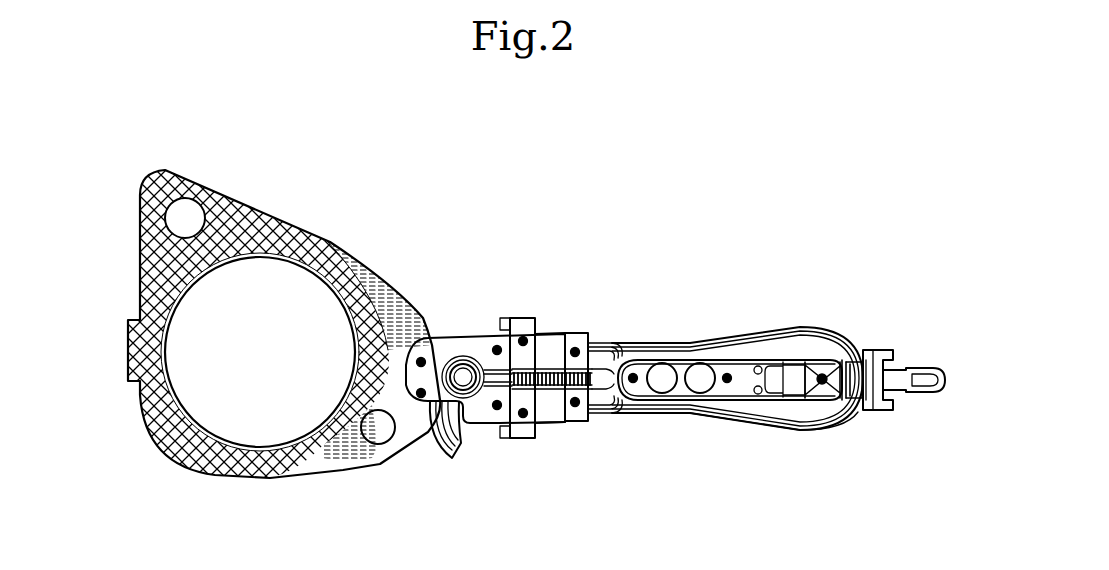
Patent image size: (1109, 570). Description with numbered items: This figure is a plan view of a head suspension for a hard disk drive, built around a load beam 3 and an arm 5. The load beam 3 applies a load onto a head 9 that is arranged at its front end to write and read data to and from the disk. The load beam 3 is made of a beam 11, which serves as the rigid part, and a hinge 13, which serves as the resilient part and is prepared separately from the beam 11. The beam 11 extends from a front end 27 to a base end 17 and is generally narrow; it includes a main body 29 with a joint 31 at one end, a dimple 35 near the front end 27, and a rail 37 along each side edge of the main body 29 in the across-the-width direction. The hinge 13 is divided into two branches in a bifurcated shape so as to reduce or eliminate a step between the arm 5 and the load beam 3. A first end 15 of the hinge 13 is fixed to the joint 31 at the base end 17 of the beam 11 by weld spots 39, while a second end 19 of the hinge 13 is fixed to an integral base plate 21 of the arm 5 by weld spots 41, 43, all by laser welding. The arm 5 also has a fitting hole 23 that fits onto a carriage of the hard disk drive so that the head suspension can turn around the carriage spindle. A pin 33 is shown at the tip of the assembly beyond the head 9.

The load beam 3 is at (761, 326).
The arm 5 is at (305, 226).
The head 9 is at (849, 340).
The beam 11 is at (726, 375).
The hinge 13 is at (551, 334).
The first end 15 is at (578, 330).
The base end 17 is at (590, 430).
The second end 19 is at (457, 331).
The base plate 21 is at (433, 312).
The fitting hole 23 is at (232, 290).
The front end 27 is at (879, 431).
The main body 29 is at (733, 408).
The joint 31 is at (576, 428).
The pin 33 is at (926, 371).
The dimple 35 is at (822, 374).
The rail 37 is at (641, 345).
The weld spots 39 is at (601, 341).
The weld spots 41 is at (523, 338).
The weld spots 43 is at (421, 360).